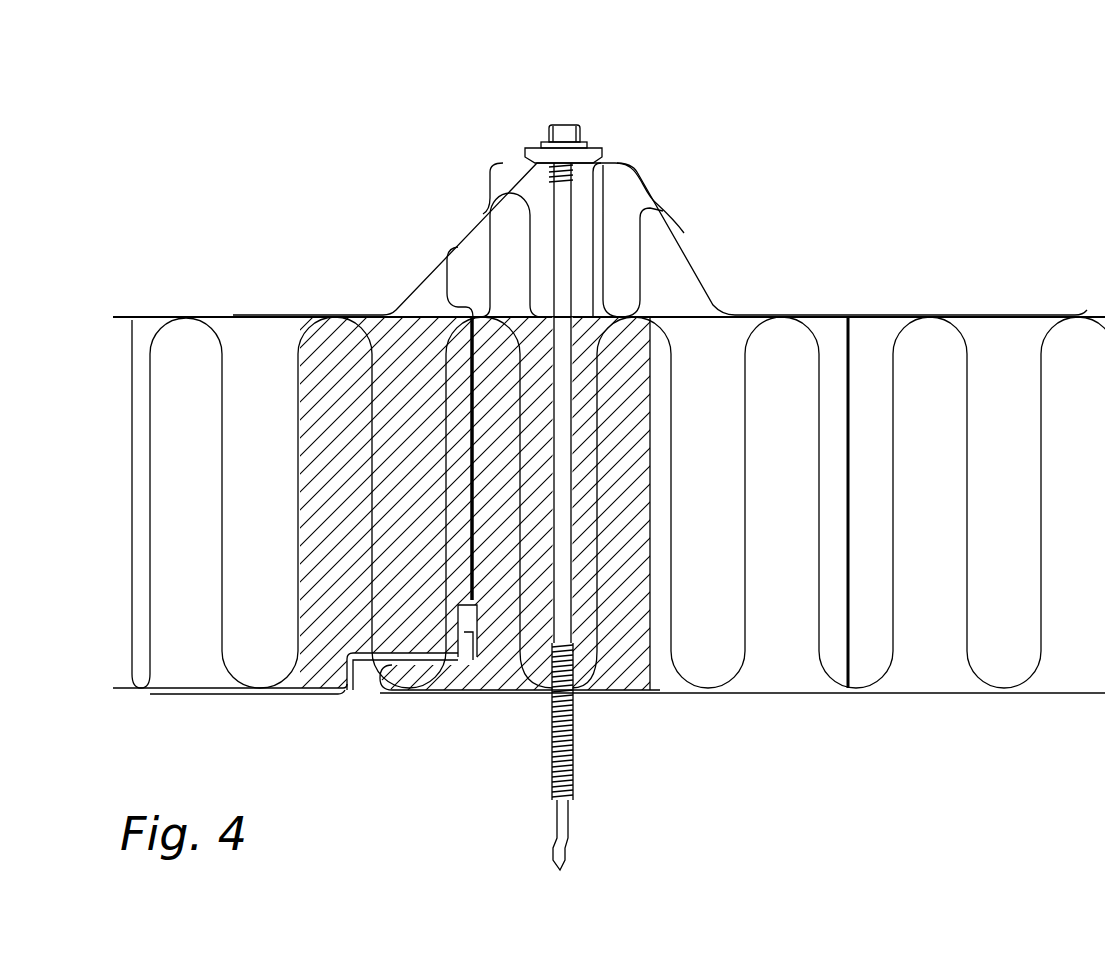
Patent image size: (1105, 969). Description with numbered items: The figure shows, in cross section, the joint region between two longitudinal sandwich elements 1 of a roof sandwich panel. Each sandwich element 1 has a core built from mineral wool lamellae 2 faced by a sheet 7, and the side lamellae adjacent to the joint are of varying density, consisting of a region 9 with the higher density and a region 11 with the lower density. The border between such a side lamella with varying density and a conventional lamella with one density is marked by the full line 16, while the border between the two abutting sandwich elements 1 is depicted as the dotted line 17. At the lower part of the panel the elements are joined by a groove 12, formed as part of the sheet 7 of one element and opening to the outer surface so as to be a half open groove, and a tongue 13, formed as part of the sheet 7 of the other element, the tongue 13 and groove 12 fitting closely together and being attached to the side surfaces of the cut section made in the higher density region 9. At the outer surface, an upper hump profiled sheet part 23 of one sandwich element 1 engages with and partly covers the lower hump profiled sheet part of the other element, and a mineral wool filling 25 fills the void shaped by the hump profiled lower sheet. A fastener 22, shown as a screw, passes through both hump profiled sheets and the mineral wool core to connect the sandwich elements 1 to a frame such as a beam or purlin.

The longitudinal sandwich element 1 is at (1010, 700).
The lamellae 2 is at (776, 705).
The sheet 7 is at (952, 310).
The region with the higher density 9 is at (408, 525).
The region with the lower density 11 is at (205, 519).
The groove 12 is at (349, 692).
The tongue 13 is at (425, 694).
The full line 16 is at (848, 540).
The dotted line 17 is at (472, 572).
The fastener 22 is at (688, 262).
The upper hump profiled sheet part 23 is at (637, 172).
The mineral wool filling 25 is at (625, 274).